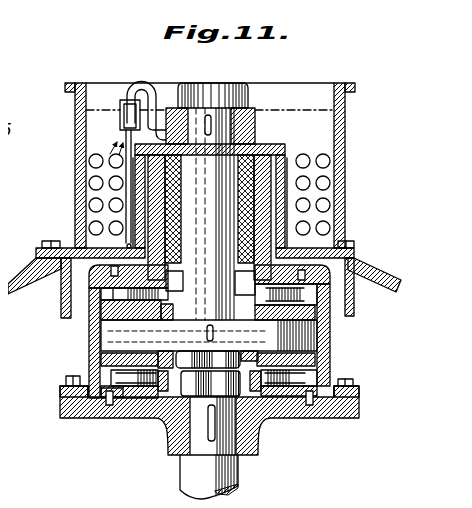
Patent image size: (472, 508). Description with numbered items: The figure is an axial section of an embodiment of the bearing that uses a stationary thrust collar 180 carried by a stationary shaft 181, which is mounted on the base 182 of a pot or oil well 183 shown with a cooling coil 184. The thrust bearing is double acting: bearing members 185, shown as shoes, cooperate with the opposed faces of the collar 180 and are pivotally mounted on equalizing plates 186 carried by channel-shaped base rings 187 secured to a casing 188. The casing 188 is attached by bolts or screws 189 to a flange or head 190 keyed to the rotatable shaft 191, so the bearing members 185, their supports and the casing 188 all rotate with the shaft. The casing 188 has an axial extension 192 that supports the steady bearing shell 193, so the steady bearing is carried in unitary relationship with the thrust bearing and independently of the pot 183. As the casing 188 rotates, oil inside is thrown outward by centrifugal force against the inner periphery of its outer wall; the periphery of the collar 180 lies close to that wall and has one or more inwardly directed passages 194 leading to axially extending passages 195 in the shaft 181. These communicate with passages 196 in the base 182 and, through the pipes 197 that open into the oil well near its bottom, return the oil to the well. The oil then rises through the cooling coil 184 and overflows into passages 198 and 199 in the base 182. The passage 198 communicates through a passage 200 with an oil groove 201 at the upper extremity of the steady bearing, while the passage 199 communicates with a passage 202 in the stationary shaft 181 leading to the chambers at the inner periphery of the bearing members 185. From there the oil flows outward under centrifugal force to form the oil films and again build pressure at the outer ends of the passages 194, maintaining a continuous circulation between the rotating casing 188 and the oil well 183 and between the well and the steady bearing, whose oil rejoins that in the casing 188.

The stationary thrust collar 180 is at (289, 330).
The stationary shaft 181 is at (262, 190).
The base 182 is at (240, 130).
The pot or oil well 183 is at (337, 122).
The cooling coil 184 is at (322, 151).
The bearing members 185 is at (81, 308).
The equalizing plates 186 is at (300, 285).
The channel-shaped base rings 187 is at (114, 398).
The casing 188 is at (81, 283).
The bolts or screws 189 is at (349, 373).
The flange or head 190 is at (128, 397).
The rotatable shaft 191 is at (215, 466).
The axial extension 192 is at (258, 217).
The steady bearing shell 193 is at (338, 204).
The inwardly directed passages 194 is at (108, 389).
The axially extending passages 195 is at (136, 342).
The passages in the base 196 is at (132, 76).
The pipes 197 is at (114, 139).
The passage 198 is at (166, 108).
The passage 199 is at (240, 112).
The passage 200 is at (209, 84).
The oil groove 201 is at (100, 171).
The passage in the stationary shaft 202 is at (276, 335).